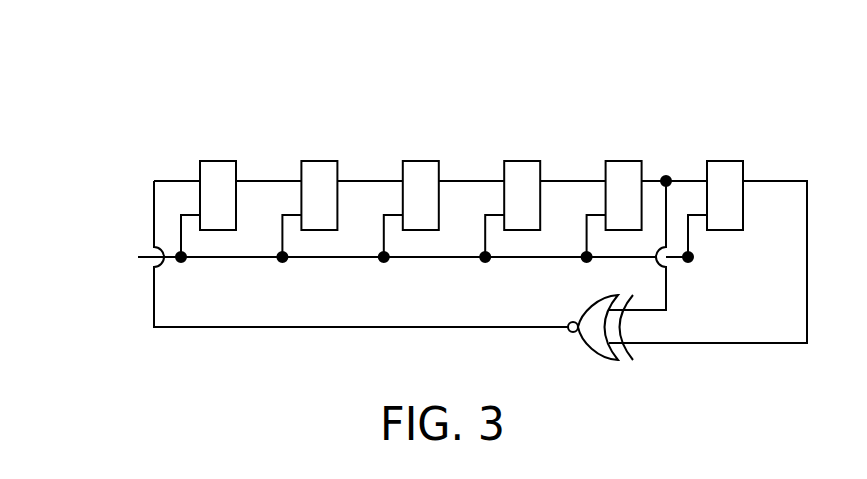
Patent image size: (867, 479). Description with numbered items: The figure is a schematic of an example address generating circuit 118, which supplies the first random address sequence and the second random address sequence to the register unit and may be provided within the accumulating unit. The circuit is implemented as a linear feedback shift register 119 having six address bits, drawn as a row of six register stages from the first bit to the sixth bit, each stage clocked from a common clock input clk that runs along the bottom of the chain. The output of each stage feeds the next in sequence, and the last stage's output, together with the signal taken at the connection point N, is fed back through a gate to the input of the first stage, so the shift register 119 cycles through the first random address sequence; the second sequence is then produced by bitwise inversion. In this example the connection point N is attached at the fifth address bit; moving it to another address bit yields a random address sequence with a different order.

The address generating circuit 118 is at (76, 35).
The linear feedback shift register 119 is at (610, 118).
The clock signal input clk is at (392, 255).
The connection point N is at (649, 243).